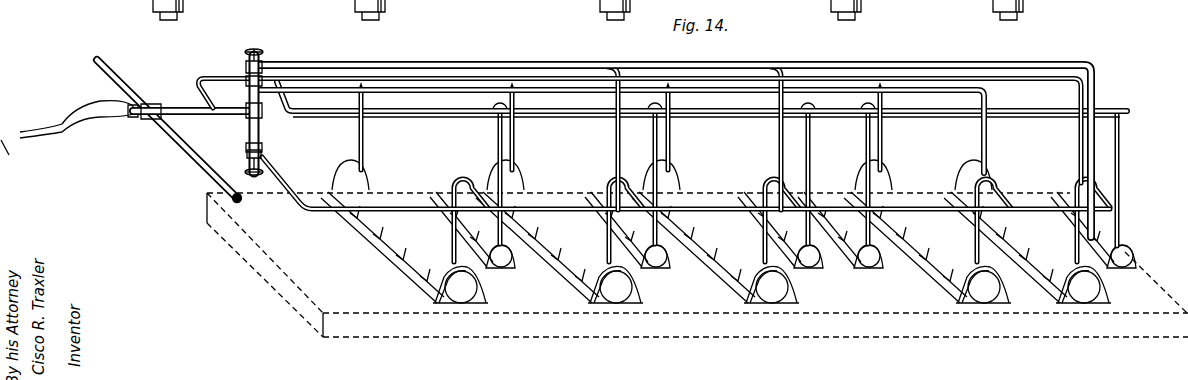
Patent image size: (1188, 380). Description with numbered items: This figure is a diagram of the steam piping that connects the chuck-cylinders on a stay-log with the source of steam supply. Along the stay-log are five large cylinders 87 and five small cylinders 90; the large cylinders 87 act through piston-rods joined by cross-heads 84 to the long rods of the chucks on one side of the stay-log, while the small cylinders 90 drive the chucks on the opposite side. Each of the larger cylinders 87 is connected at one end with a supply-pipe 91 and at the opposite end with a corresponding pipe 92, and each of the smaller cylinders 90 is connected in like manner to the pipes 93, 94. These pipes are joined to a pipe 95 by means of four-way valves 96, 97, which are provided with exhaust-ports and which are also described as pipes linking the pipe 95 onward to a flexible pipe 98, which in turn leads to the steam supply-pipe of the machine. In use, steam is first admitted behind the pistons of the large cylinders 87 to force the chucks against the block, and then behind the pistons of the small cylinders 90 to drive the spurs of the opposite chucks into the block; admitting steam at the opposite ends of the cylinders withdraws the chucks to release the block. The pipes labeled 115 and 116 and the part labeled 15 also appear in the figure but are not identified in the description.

The cross-heads 84 is at (386, 4).
The spray head 15 is at (1009, 30).
The cylinders 87 is at (408, 260).
The cylinders 90 is at (507, 266).
The supply-pipe 91 is at (415, 207).
The pipe 92 is at (387, 93).
The pipe 93 is at (577, 114).
The pipe 94 is at (541, 62).
The pipe 95 is at (246, 86).
The four-way valve 96 is at (245, 59).
The four-way valve 97 is at (250, 153).
The flexible pipe 98 is at (77, 122).
The supply pipe 115 is at (180, 109).
The branch pipe 116 is at (182, 145).